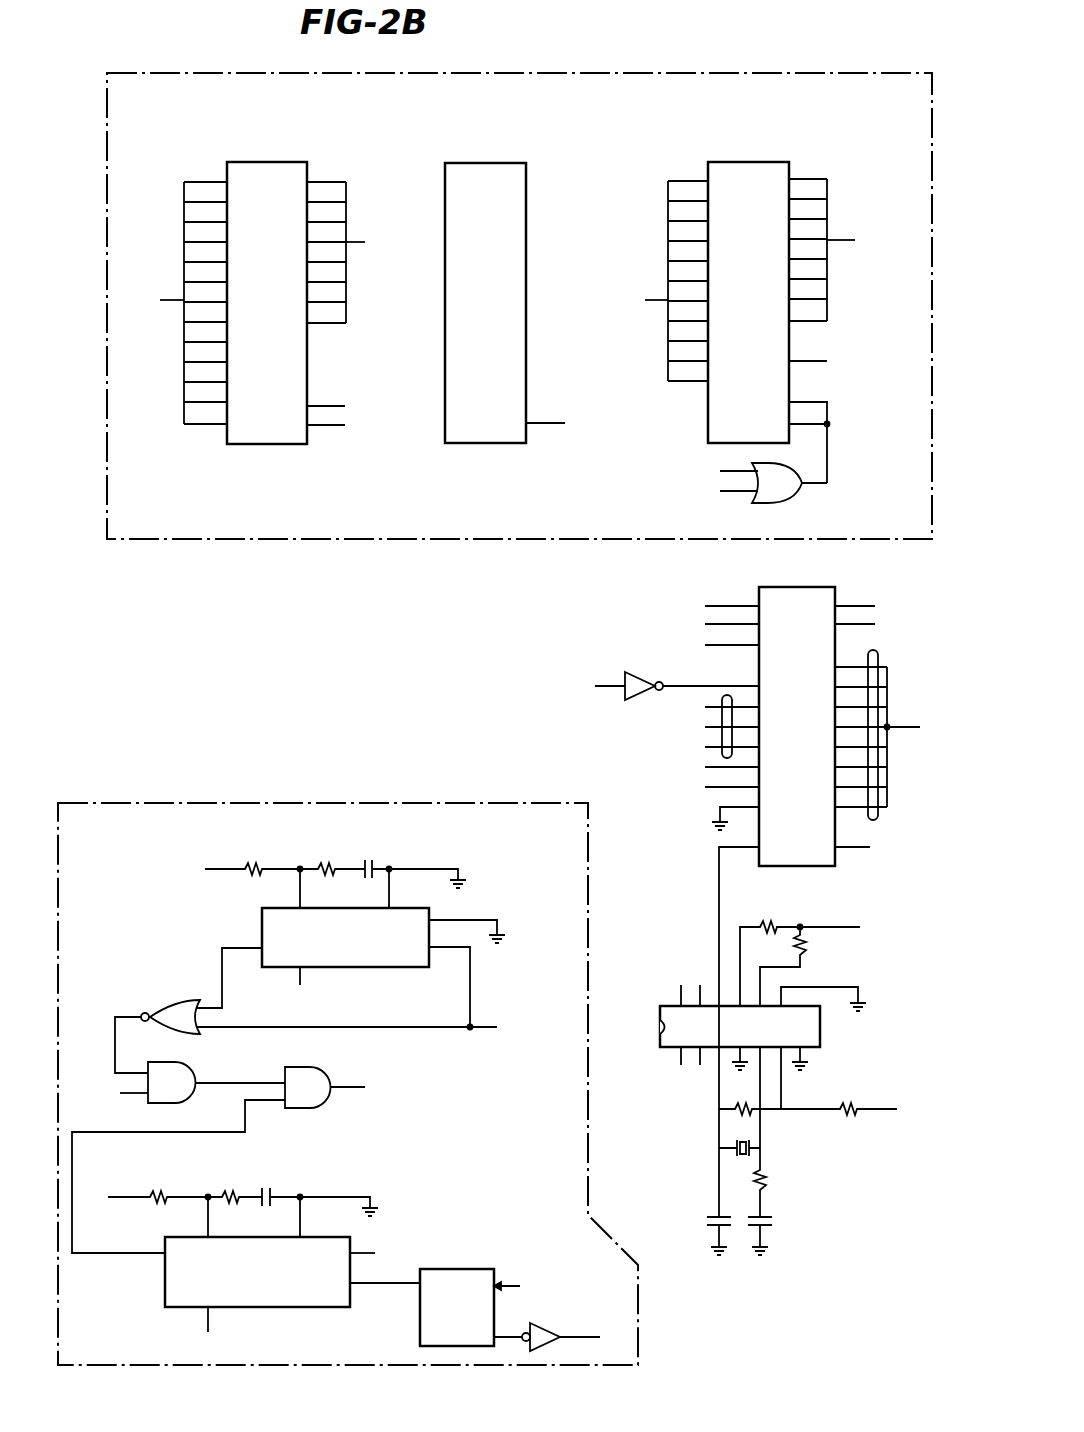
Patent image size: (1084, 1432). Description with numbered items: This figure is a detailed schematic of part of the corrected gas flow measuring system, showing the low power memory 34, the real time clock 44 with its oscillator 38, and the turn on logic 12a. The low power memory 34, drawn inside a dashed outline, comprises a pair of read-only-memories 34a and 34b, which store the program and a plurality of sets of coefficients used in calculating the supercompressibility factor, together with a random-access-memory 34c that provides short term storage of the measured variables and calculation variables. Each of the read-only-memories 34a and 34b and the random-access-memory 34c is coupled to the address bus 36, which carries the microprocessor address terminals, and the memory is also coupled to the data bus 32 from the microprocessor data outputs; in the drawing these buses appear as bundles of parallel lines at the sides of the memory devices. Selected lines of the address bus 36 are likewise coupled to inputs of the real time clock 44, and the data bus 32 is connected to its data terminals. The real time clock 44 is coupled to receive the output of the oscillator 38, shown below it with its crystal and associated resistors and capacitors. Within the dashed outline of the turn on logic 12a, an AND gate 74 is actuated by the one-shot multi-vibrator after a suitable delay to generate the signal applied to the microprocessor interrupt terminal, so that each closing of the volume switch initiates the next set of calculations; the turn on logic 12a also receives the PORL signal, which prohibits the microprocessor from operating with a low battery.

The low power memory 34 is at (526, 446).
The read-only-memory 34a is at (270, 445).
The read-only-memory 34b is at (470, 444).
The random-access-memory 34c is at (708, 437).
The address bus 36 is at (168, 300).
The data bus 32 is at (840, 238).
The real time clock 44 is at (828, 829).
The oscillator 38 is at (822, 1035).
The AND gate 74 is at (322, 1067).
The turn on logic 12a is at (348, 1084).